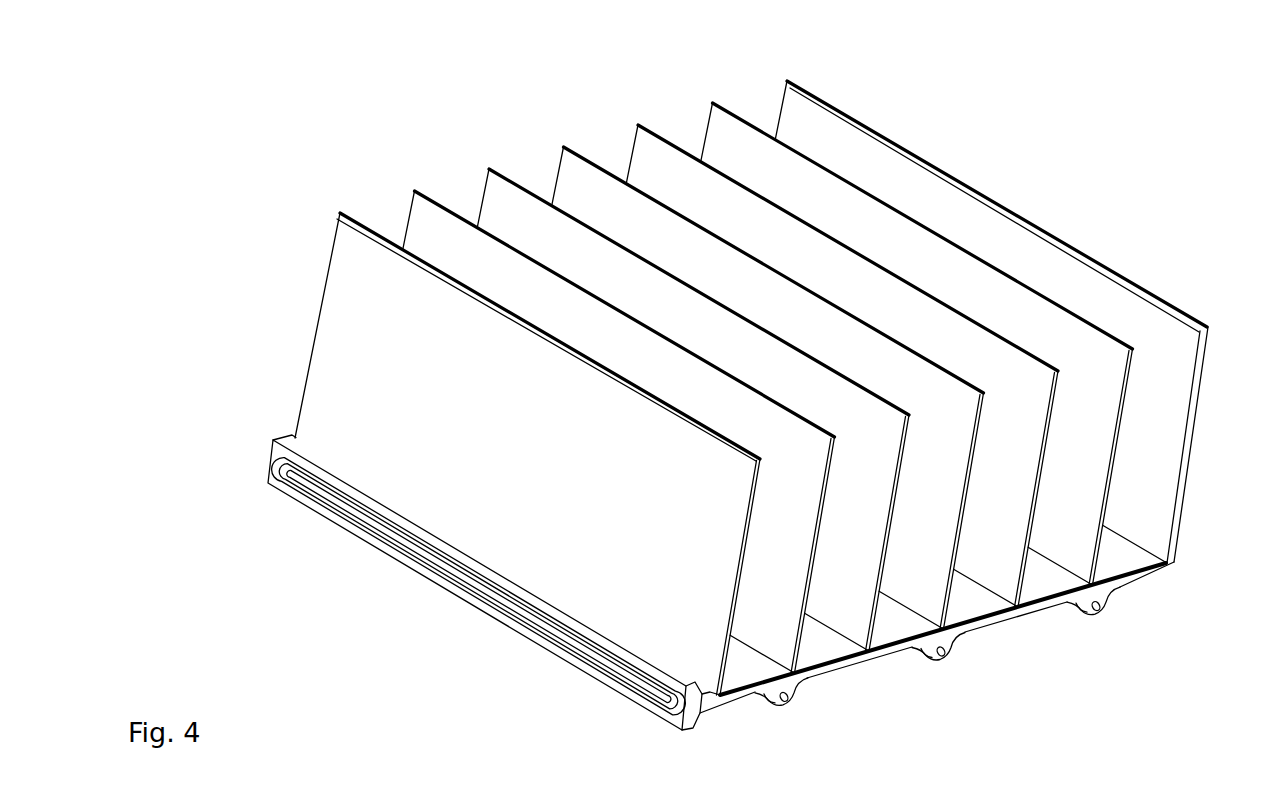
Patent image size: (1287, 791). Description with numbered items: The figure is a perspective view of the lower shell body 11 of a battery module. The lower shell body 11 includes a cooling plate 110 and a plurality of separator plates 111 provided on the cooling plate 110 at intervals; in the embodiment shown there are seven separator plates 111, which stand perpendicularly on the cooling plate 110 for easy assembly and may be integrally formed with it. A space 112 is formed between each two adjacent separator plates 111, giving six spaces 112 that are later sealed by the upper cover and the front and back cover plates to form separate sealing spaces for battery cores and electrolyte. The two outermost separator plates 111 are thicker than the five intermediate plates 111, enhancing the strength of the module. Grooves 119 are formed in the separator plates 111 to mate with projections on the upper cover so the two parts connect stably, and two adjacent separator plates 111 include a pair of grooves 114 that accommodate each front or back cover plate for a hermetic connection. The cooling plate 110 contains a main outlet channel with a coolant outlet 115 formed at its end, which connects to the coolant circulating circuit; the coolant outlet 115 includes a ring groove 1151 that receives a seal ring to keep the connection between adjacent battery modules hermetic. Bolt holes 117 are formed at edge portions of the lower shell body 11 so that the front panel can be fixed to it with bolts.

The lower shell body 11 is at (1037, 203).
The cooling plate 110 is at (860, 660).
The separator plate 111 is at (345, 270).
The space 112 is at (837, 163).
The groove 114 is at (1050, 370).
The coolant outlet 115 is at (272, 479).
The ring groove 1151 is at (460, 584).
The bolt hole 117 is at (788, 702).
The groove 119 is at (1196, 315).